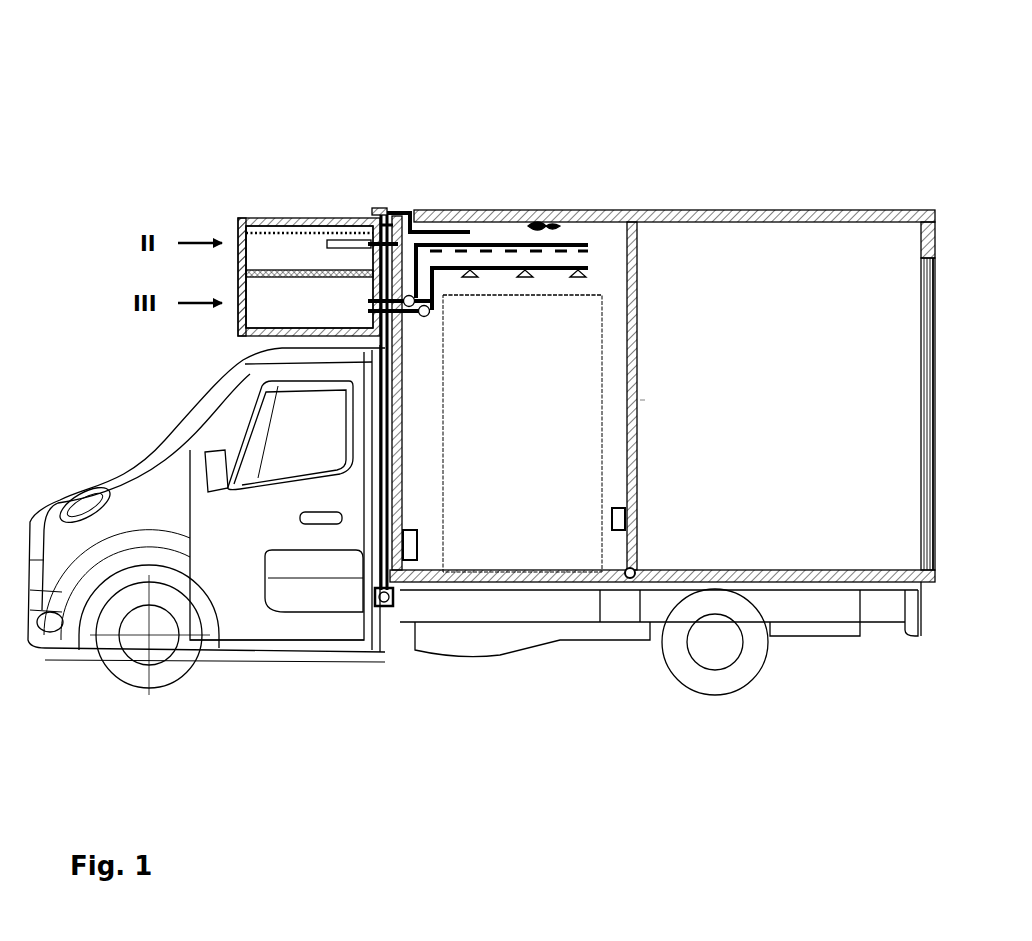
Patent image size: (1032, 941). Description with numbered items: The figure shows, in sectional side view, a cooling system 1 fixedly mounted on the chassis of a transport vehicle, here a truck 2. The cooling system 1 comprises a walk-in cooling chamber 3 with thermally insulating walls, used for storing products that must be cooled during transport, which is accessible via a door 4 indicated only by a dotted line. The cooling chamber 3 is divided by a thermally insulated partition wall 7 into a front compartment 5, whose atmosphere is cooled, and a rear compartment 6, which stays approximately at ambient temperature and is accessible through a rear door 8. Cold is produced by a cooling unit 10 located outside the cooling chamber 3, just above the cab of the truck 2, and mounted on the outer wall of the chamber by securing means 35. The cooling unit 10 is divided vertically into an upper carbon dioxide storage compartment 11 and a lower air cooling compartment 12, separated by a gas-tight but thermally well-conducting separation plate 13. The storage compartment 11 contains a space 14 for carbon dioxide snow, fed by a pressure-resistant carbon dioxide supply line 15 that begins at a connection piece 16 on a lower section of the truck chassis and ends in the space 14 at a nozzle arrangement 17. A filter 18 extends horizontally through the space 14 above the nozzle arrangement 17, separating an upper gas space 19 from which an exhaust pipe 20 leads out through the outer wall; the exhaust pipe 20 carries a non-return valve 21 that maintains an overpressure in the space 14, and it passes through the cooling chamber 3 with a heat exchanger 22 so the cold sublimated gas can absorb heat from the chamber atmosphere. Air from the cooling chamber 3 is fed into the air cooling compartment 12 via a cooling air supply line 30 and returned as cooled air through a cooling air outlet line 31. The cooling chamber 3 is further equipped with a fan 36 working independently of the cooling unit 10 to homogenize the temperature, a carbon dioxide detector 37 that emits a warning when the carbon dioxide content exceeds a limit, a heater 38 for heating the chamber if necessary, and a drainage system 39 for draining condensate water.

The cooling system 1 is at (115, 60).
The truck 2 is at (270, 640).
The cooling chamber 3 is at (647, 200).
The door 4 is at (602, 497).
The front compartment 5 is at (522, 433).
The rear compartment 6 is at (779, 396).
The partition wall 7 is at (637, 468).
The rear door 8 is at (920, 480).
The cooling unit 10 is at (238, 200).
The carbon dioxide storage compartment 11 is at (268, 248).
The air cooling compartment 12 is at (278, 316).
The separation plate 13 is at (264, 280).
The space 14 is at (309, 248).
The carbon dioxide supply line 15 is at (388, 490).
The connection piece 16 is at (386, 606).
The nozzle arrangement 17 is at (336, 240).
The filter 18 is at (243, 232).
The gas space 19 is at (284, 232).
The exhaust pipe 20 is at (372, 213).
The non-return valve 21 is at (378, 208).
The heat exchanger 22 is at (440, 232).
The cooling air supply line 30 is at (492, 245).
The cooling air outlet line 31 is at (583, 268).
The securing means 35 is at (402, 206).
The fan 36 is at (532, 222).
The carbon dioxide detector 37 is at (618, 530).
The heater 38 is at (408, 545).
The drainage system 39 is at (632, 580).